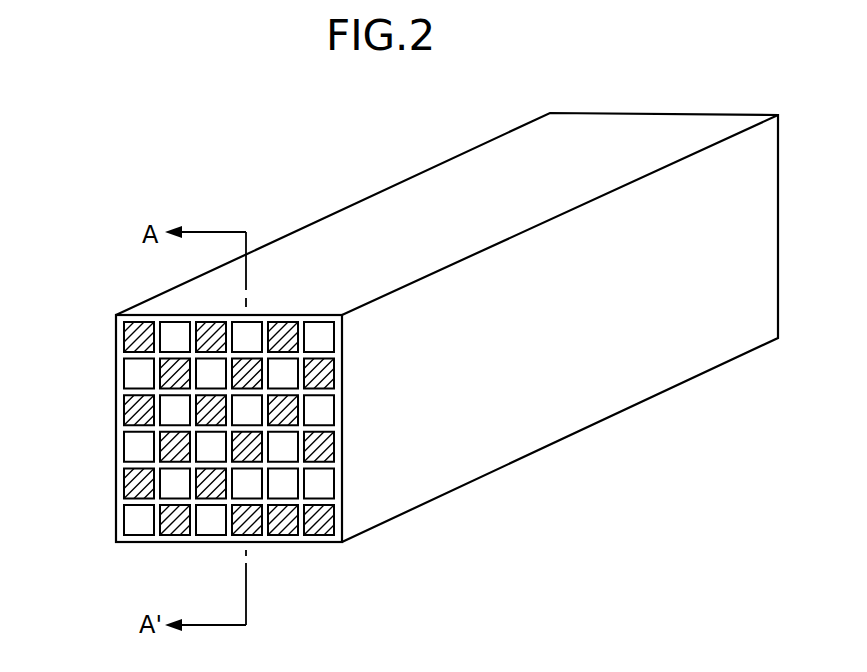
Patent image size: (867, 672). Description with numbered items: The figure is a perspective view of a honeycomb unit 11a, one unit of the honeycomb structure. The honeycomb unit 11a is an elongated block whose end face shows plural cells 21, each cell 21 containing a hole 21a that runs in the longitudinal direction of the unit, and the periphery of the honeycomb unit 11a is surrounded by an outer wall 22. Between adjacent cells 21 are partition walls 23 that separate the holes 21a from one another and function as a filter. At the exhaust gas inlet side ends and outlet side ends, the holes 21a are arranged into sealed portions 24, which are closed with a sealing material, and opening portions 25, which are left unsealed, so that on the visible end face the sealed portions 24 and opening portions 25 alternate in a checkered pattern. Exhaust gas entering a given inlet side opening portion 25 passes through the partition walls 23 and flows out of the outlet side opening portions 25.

The honeycomb unit 11a is at (292, 143).
The cell 21 is at (91, 531).
The hole 21a is at (138, 520).
The outer wall 22 is at (338, 487).
The partition wall 23 is at (283, 510).
The sealed portion 24 is at (131, 339).
The opening portion 25 is at (131, 380).